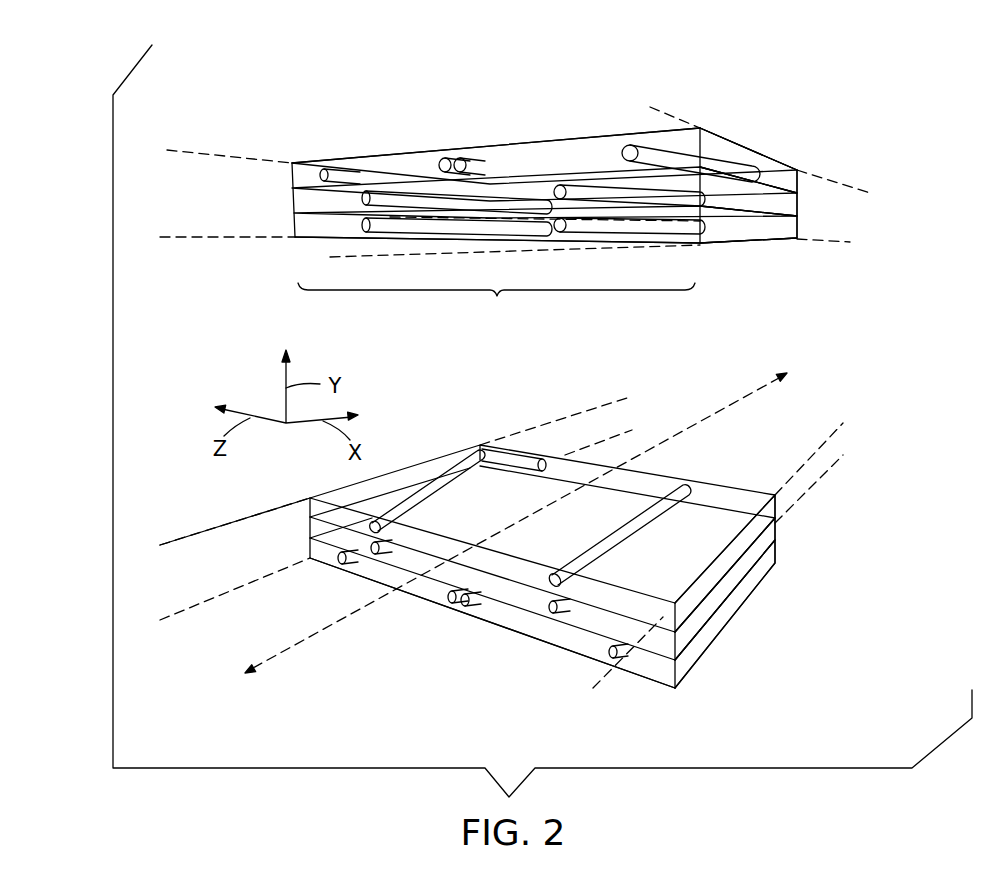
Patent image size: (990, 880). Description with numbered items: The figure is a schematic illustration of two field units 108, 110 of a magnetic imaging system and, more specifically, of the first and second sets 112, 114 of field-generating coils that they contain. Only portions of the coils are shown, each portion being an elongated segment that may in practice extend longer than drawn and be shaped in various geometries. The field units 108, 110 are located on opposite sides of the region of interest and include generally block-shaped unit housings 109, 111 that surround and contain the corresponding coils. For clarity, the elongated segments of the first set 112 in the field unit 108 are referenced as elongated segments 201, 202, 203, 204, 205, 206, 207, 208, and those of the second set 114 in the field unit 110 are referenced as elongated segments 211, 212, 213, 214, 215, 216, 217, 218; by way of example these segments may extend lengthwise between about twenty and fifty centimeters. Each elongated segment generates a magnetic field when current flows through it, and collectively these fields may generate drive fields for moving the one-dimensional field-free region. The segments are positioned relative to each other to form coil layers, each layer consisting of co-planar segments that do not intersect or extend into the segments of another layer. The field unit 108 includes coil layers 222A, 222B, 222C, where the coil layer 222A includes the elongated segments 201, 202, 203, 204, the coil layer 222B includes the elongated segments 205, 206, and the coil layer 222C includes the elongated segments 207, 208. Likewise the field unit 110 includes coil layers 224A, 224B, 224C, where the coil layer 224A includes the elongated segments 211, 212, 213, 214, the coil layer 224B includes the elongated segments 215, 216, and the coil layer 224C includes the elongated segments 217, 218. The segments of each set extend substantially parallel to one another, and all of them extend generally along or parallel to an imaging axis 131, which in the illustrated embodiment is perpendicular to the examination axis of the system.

The field unit 108 is at (530, 110).
The unit housing 109 is at (397, 153).
The field unit 110 is at (522, 670).
The unit housing 111 is at (417, 603).
The first set 112 is at (496, 303).
The second set 114 is at (548, 460).
The imaging axis 131 is at (693, 422).
The elongated segment 201 is at (338, 176).
The elongated segment 202 is at (441, 150).
The elongated segment 203 is at (485, 163).
The elongated segment 204 is at (633, 143).
The elongated segment 205 is at (386, 202).
The elongated segment 206 is at (585, 198).
The elongated segment 207 is at (396, 227).
The elongated segment 208 is at (597, 230).
The elongated segment 211 is at (340, 567).
The elongated segment 212 is at (448, 612).
The elongated segment 213 is at (468, 615).
The elongated segment 214 is at (617, 665).
The elongated segment 215 is at (380, 567).
The elongated segment 216 is at (560, 615).
The elongated segment 217 is at (430, 509).
The elongated segment 218 is at (608, 555).
The coil layer 222A is at (762, 157).
The coil layer 222B is at (800, 192).
The coil layer 222C is at (800, 219).
The coil layer 224A is at (733, 598).
The coil layer 224B is at (740, 563).
The coil layer 224C is at (762, 522).